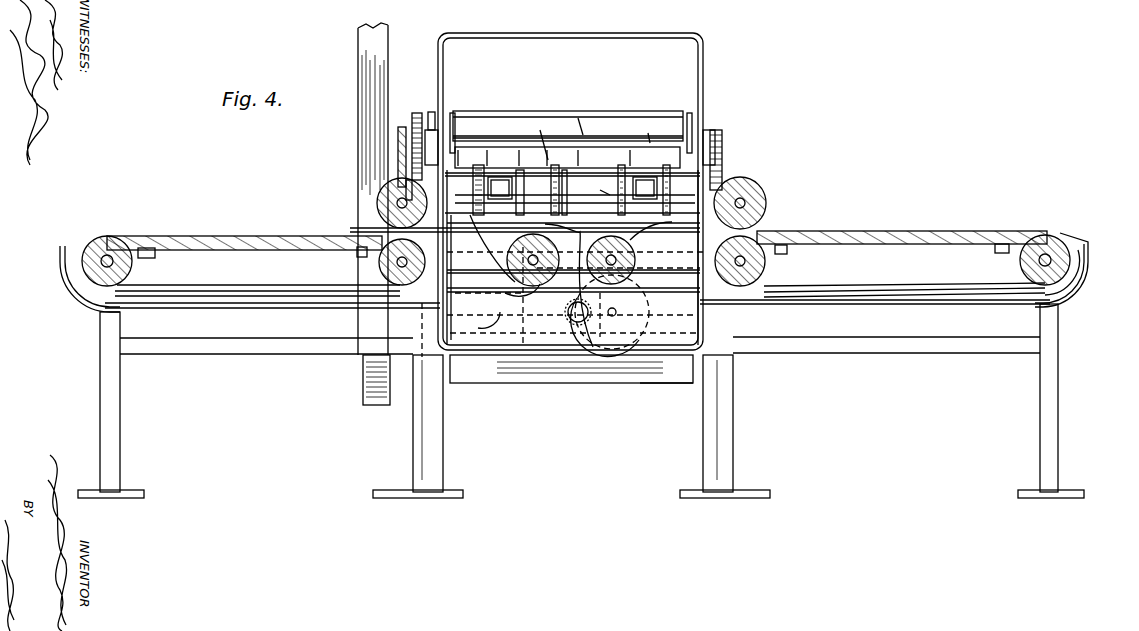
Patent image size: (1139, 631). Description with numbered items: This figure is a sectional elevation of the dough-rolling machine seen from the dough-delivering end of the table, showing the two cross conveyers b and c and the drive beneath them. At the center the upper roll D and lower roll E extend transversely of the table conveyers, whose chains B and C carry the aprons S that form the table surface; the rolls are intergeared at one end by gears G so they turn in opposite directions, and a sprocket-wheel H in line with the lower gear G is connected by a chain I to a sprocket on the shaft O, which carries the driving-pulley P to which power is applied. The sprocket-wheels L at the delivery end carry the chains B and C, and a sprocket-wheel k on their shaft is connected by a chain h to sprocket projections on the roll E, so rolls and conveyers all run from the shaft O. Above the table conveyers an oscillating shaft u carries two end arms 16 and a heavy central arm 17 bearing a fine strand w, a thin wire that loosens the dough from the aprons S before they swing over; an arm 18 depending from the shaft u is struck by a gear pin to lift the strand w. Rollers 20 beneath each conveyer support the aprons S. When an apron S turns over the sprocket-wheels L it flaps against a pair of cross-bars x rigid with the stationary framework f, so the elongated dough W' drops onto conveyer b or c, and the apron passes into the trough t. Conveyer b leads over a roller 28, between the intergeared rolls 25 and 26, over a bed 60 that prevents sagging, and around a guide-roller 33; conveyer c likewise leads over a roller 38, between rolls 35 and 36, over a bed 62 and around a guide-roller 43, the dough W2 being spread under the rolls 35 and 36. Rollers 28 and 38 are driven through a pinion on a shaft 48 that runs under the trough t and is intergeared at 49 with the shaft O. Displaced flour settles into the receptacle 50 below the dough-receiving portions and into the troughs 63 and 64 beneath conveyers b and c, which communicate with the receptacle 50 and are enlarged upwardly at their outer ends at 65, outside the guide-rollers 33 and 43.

The arm 16 is at (452, 118).
The central arm 17 is at (593, 123).
The arm 18 is at (723, 150).
The roller 20 is at (574, 186).
The upper roll 25 is at (358, 232).
The lower roll 26 is at (378, 275).
The roller 28 is at (537, 286).
The guide-roller 33 is at (140, 262).
The upper roll 35 is at (767, 204).
The lower roll 36 is at (766, 275).
The roller 38 is at (632, 270).
The guide-roller 43 is at (1023, 273).
The shaft 48 is at (611, 318).
The intergearing 49 is at (580, 324).
The receptacle 50 is at (510, 356).
The bed 60 is at (248, 245).
The bed 62 is at (893, 240).
The trough 63 is at (175, 306).
The trough 64 is at (972, 305).
The upwardly enlarged trough end 65 is at (58, 262).
The upper roll D is at (582, 124).
The sprocket-wheel L is at (762, 157).
The oscillating shaft u is at (649, 128).
The gears G is at (468, 156).
The conveyer chains B is at (495, 156).
The apron S is at (571, 193).
The chain h is at (555, 156).
The strand w is at (587, 156).
The conveyer chains C is at (638, 156).
The sprocket-wheel k is at (595, 198).
The chain I is at (412, 127).
The sprocket-wheel H is at (440, 155).
The lower roll E is at (398, 192).
The elongated dough pieces W2 is at (812, 220).
The elongated dough pieces W' is at (580, 277).
The cross-bar x is at (579, 260).
The shaft O is at (554, 315).
The endless conveyer b is at (130, 240).
The endless conveyer c is at (998, 240).
The stationary framework f is at (100, 345).
The trough t is at (650, 385).
The driving-pulley P is at (362, 380).